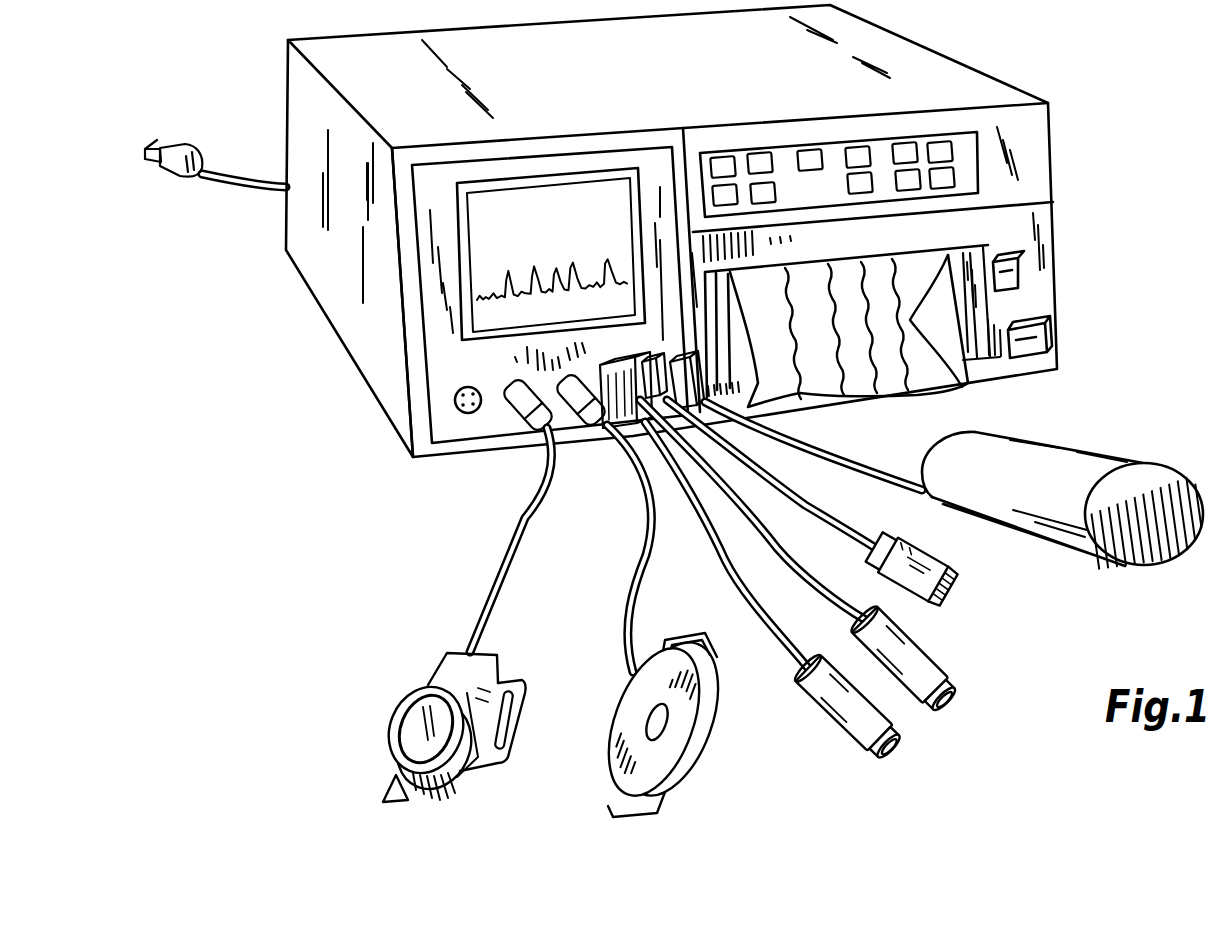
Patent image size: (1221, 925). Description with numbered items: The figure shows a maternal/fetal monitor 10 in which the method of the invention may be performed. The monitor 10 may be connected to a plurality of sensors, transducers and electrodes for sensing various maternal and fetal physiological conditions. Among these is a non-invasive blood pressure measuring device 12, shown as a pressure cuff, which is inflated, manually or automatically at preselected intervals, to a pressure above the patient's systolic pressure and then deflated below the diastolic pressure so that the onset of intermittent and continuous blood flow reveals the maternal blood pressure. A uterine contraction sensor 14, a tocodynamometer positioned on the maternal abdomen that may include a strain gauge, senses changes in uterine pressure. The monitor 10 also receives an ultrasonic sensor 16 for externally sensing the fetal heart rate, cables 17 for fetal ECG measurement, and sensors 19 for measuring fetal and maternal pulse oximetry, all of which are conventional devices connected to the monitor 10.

The maternal/fetal monitor 10 is at (240, 328).
The non-invasive blood pressure measuring device 12 is at (1107, 458).
The uterine contraction sensor 14 is at (697, 760).
The ultrasonic sensor 16 is at (458, 773).
The cables 17 is at (940, 757).
The sensors 19 is at (957, 588).